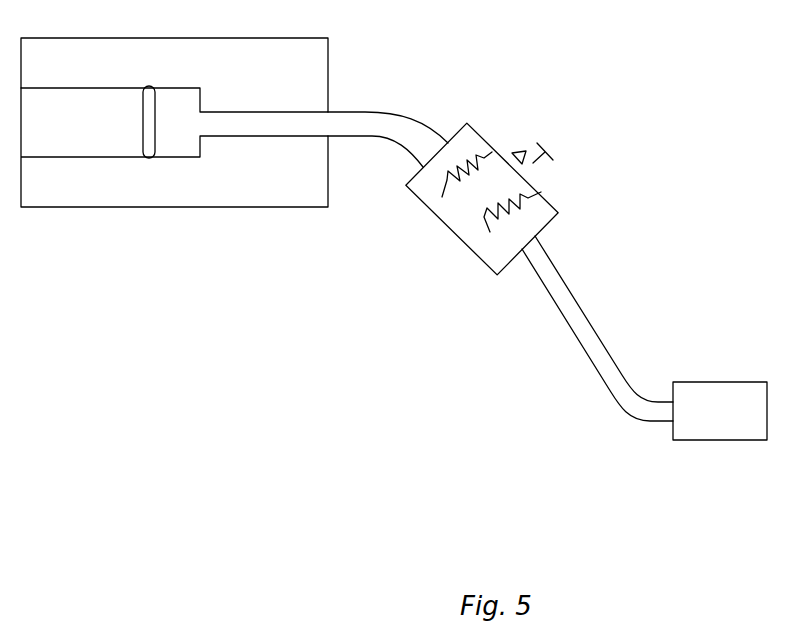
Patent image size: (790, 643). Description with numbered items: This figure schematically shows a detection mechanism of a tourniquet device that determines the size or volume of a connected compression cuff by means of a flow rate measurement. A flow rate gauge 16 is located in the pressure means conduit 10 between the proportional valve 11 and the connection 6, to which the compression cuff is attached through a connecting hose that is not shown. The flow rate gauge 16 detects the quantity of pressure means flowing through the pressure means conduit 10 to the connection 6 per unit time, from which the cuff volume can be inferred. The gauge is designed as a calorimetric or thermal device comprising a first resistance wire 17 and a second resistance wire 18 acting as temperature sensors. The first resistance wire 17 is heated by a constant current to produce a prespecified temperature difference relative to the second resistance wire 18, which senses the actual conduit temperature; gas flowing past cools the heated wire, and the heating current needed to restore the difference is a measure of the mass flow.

The connection 6 is at (203, 105).
The pressure means conduit 10 is at (602, 342).
The proportional valve 11 is at (706, 425).
The flow rate gauge 16 is at (475, 125).
The first resistance wire 17 is at (533, 197).
The second resistance wire 18 is at (443, 205).